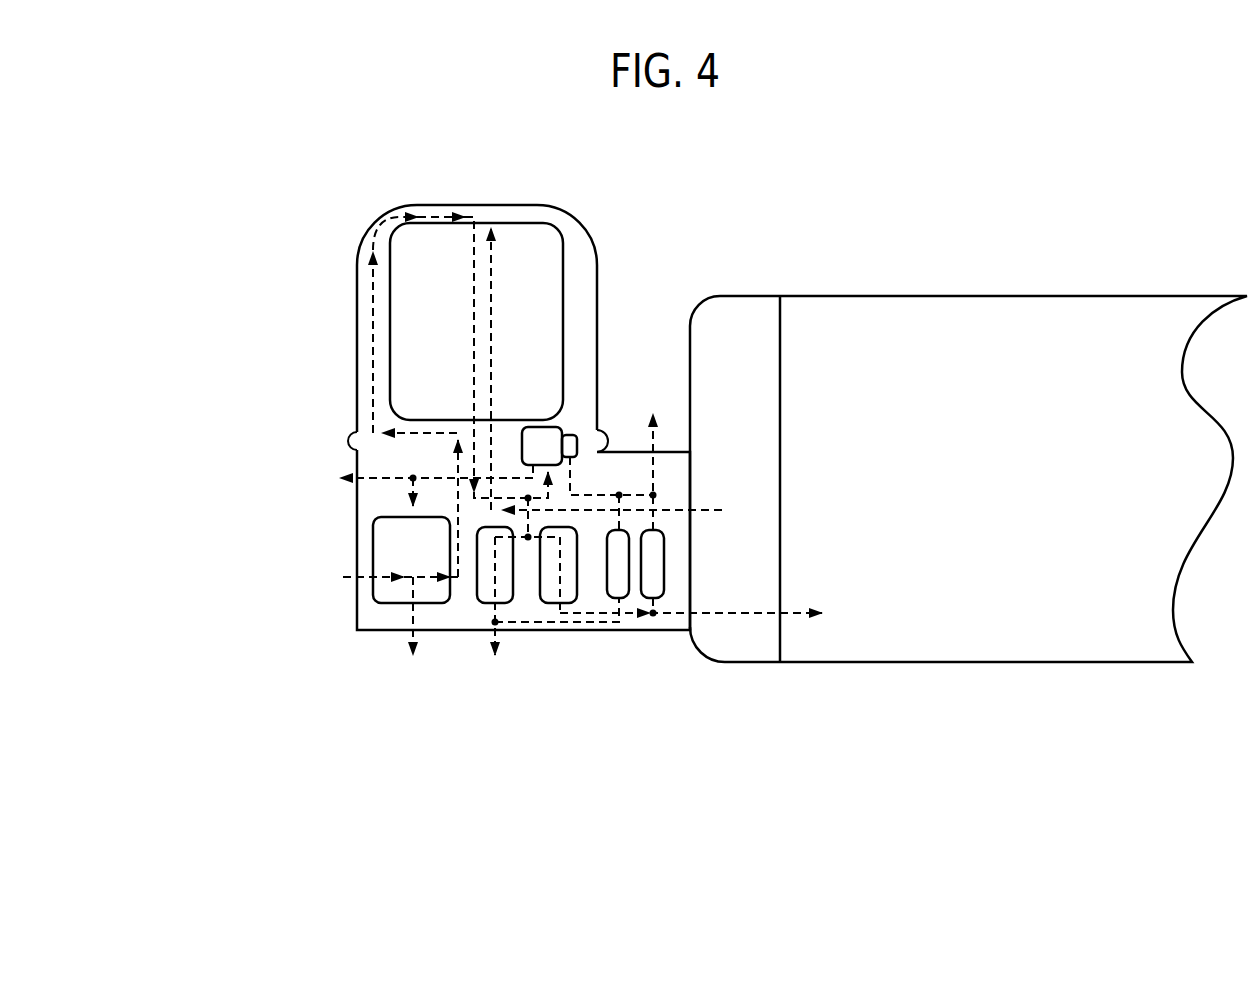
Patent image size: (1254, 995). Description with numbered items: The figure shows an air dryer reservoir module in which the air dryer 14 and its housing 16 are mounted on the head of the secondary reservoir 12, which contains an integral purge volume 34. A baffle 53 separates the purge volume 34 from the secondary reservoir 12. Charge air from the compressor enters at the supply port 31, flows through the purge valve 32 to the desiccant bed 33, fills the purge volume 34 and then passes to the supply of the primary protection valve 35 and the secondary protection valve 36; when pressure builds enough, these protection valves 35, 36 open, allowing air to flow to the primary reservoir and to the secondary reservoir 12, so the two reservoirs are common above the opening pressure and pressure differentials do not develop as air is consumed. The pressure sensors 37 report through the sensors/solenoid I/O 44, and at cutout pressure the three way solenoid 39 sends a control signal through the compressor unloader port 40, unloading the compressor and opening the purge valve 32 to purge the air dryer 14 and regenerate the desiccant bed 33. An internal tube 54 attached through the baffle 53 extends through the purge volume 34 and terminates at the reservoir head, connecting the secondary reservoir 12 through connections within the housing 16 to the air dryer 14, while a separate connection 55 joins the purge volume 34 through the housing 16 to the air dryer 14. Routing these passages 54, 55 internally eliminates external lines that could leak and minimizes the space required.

The secondary reservoir 12 is at (965, 630).
The air dryer 14 is at (543, 201).
The housing 16 is at (584, 635).
The supply port 31 is at (326, 578).
The purge valve 32 is at (400, 588).
The desiccant bed 33 is at (425, 332).
The purge volume 34 is at (732, 632).
The primary protection valve 35 is at (482, 607).
The secondary protection valve 36 is at (551, 605).
The pressure sensors 37 is at (655, 580).
The three way solenoid 39 is at (573, 418).
The compressor unloader port 40 is at (328, 478).
The sensors/solenoid I/O 44 is at (655, 400).
The baffle 53 is at (780, 370).
The internal tube 54 is at (757, 613).
The connection 55 is at (722, 510).